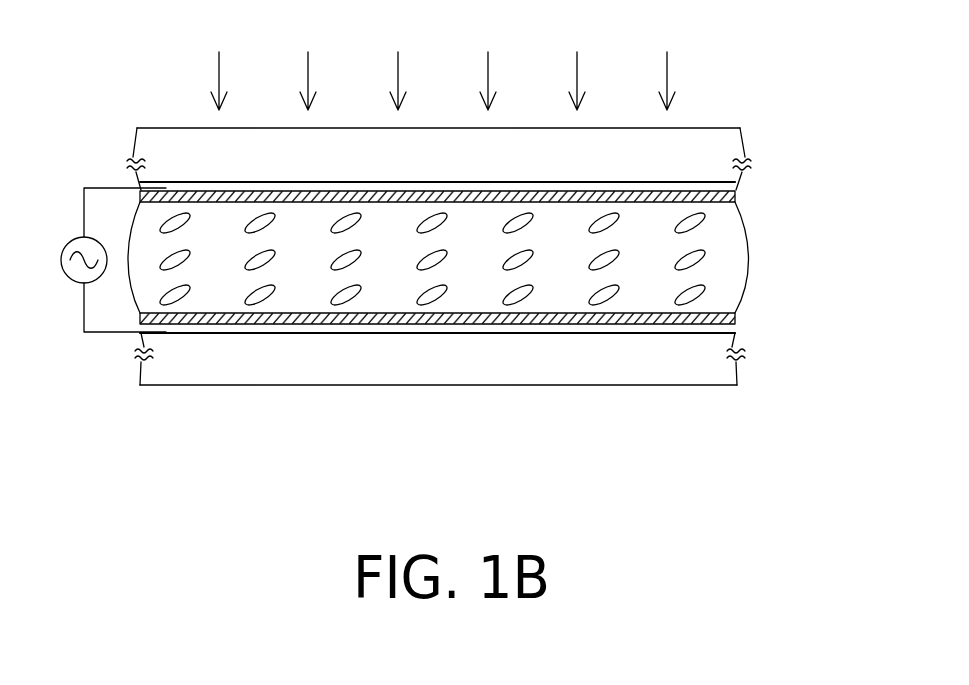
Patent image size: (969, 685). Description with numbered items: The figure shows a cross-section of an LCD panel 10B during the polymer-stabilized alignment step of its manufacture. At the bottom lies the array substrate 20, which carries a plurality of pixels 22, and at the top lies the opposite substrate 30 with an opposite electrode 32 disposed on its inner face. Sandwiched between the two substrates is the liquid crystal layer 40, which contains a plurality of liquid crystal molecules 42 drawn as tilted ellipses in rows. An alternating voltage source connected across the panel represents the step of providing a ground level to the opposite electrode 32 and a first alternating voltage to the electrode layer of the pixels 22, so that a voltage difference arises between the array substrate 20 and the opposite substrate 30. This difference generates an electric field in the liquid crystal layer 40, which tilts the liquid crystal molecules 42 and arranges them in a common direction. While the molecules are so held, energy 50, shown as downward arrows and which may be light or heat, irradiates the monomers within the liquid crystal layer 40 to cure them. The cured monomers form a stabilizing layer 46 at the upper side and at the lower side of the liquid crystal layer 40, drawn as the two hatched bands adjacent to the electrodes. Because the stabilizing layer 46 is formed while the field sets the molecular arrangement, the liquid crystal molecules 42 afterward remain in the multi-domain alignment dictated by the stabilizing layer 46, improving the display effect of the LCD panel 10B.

The LCD panel 10B is at (795, 478).
The array substrate 20 is at (707, 366).
The pixels 22 is at (725, 327).
The opposite substrate 30 is at (720, 145).
The opposite electrode 32 is at (720, 184).
The liquid crystal layer 40 is at (475, 326).
The liquid crystal molecules 42 is at (603, 298).
The stabilizing layer 46 is at (722, 196).
The energy 50 is at (670, 68).